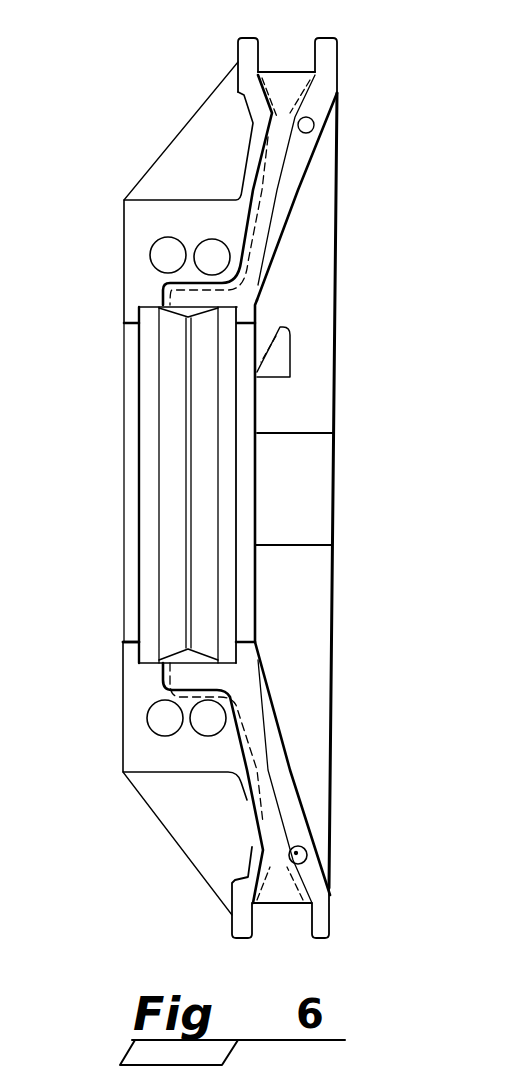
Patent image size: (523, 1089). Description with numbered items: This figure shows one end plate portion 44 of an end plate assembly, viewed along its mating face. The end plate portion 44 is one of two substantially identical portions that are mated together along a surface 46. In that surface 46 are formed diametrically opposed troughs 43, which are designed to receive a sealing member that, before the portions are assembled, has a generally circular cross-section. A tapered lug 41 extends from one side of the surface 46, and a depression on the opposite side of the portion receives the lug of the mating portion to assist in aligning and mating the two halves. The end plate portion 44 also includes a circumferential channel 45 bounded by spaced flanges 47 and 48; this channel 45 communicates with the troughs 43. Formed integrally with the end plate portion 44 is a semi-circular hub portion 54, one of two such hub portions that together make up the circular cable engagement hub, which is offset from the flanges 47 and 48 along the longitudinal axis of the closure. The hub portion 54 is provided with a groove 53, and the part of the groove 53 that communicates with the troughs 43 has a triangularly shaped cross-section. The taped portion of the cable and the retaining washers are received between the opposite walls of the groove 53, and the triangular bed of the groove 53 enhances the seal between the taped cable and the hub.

The tapered lug 41 is at (307, 863).
The trough 43 is at (265, 195).
The end plate portion 44 is at (342, 693).
The circumferential channel 45 is at (293, 48).
The surface 46 is at (143, 743).
The flange 47 is at (238, 42).
The flange 48 is at (337, 53).
The groove 53 is at (168, 450).
The hub portion 54 is at (128, 652).